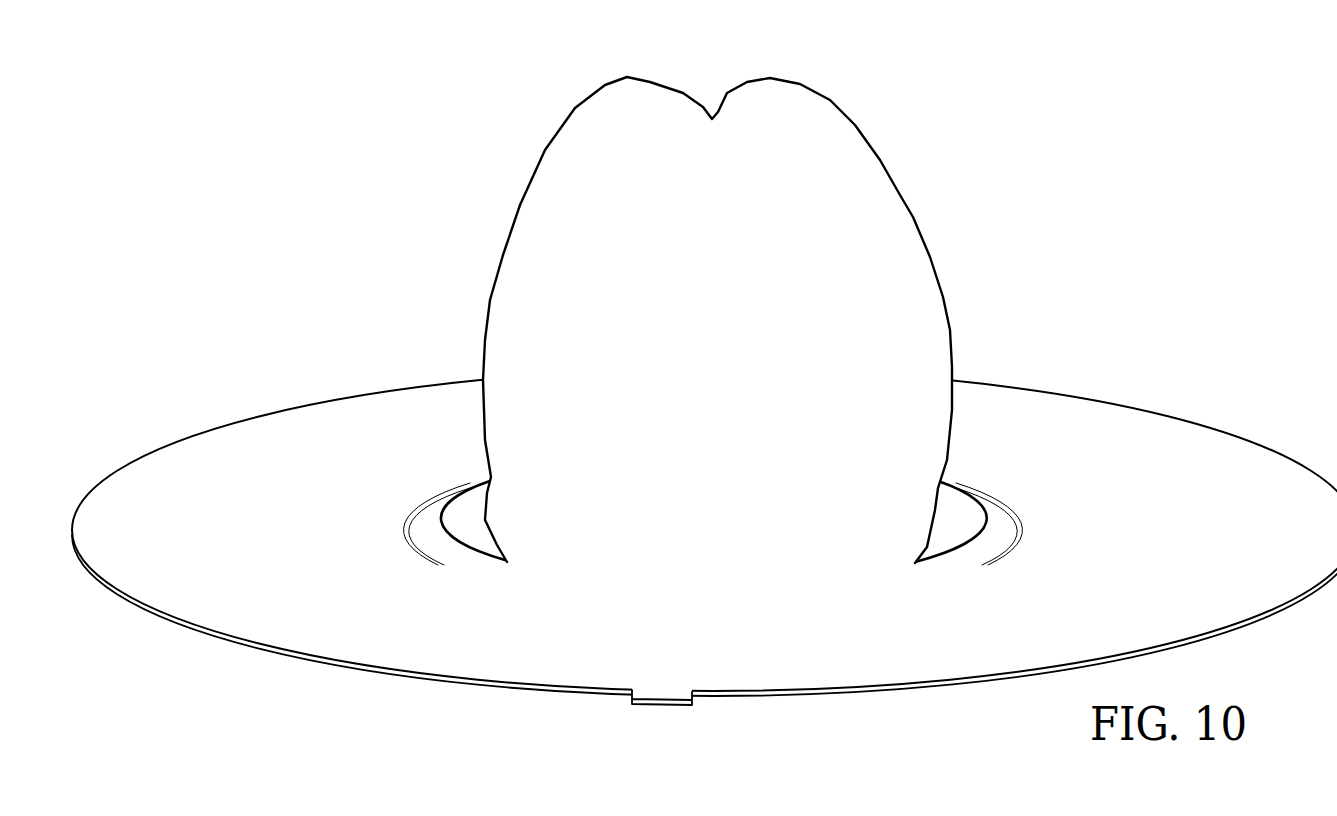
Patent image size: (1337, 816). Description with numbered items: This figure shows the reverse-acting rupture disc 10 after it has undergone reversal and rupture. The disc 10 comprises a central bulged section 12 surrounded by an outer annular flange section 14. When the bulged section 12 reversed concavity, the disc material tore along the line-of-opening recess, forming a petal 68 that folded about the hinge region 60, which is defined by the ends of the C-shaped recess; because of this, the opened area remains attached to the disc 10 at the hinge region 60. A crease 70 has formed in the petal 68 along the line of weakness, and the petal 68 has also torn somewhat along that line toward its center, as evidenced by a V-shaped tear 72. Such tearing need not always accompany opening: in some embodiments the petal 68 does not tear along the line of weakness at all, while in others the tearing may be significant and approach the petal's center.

The reverse-acting rupture disc 10 is at (704, 361).
The bulged section 12 is at (983, 548).
The annular flange section 14 is at (1185, 448).
The hinge region 60 is at (745, 578).
The petal 68 is at (943, 293).
The crease 70 is at (706, 222).
The V-shaped tear 72 is at (713, 118).